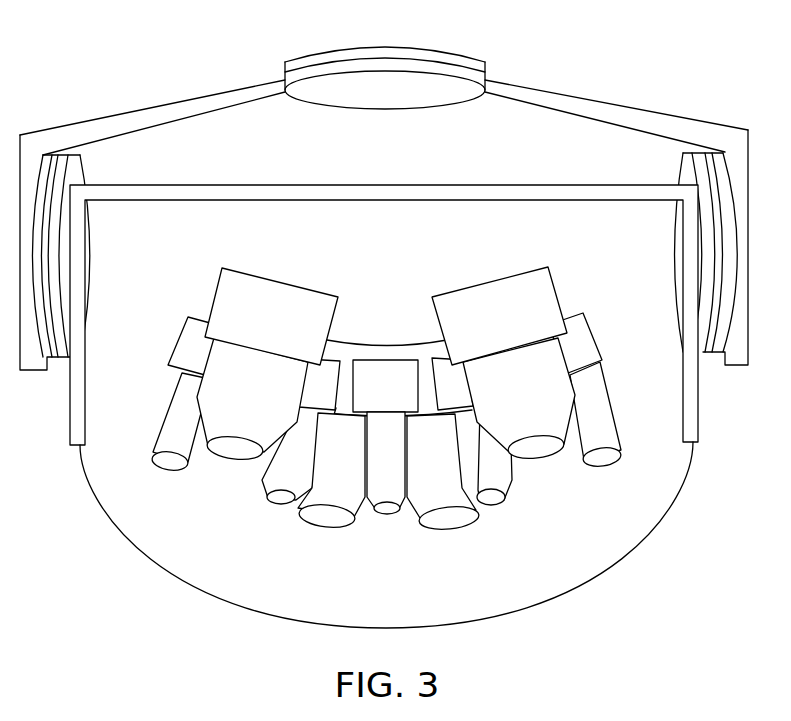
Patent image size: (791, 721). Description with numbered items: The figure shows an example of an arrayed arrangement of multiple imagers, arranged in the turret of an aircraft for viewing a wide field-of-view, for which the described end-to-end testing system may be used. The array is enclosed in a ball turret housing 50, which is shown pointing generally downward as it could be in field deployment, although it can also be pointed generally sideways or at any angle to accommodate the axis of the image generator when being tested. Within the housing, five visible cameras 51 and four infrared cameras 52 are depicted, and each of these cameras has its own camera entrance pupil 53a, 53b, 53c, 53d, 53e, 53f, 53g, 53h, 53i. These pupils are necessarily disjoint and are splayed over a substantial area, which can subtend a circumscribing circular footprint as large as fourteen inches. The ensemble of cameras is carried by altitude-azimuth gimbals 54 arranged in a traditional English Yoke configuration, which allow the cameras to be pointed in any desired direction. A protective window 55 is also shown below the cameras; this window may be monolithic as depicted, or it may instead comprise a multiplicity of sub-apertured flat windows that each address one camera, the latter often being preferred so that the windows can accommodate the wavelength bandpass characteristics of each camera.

The ball turret housing 50 is at (468, 183).
The visible cameras 51 is at (270, 505).
The infrared cameras 52 is at (547, 458).
The camera entrance pupil 53a is at (168, 470).
The camera entrance pupil 53b is at (280, 505).
The camera entrance pupil 53c is at (386, 515).
The camera entrance pupil 53d is at (500, 503).
The camera entrance pupil 53e is at (600, 467).
The camera entrance pupil 53f is at (234, 459).
The camera entrance pupil 53g is at (323, 528).
The camera entrance pupil 53h is at (450, 530).
The camera entrance pupil 53i is at (537, 459).
The altitude-azimuth gimbals 54 is at (285, 62).
The protective window 55 is at (84, 484).